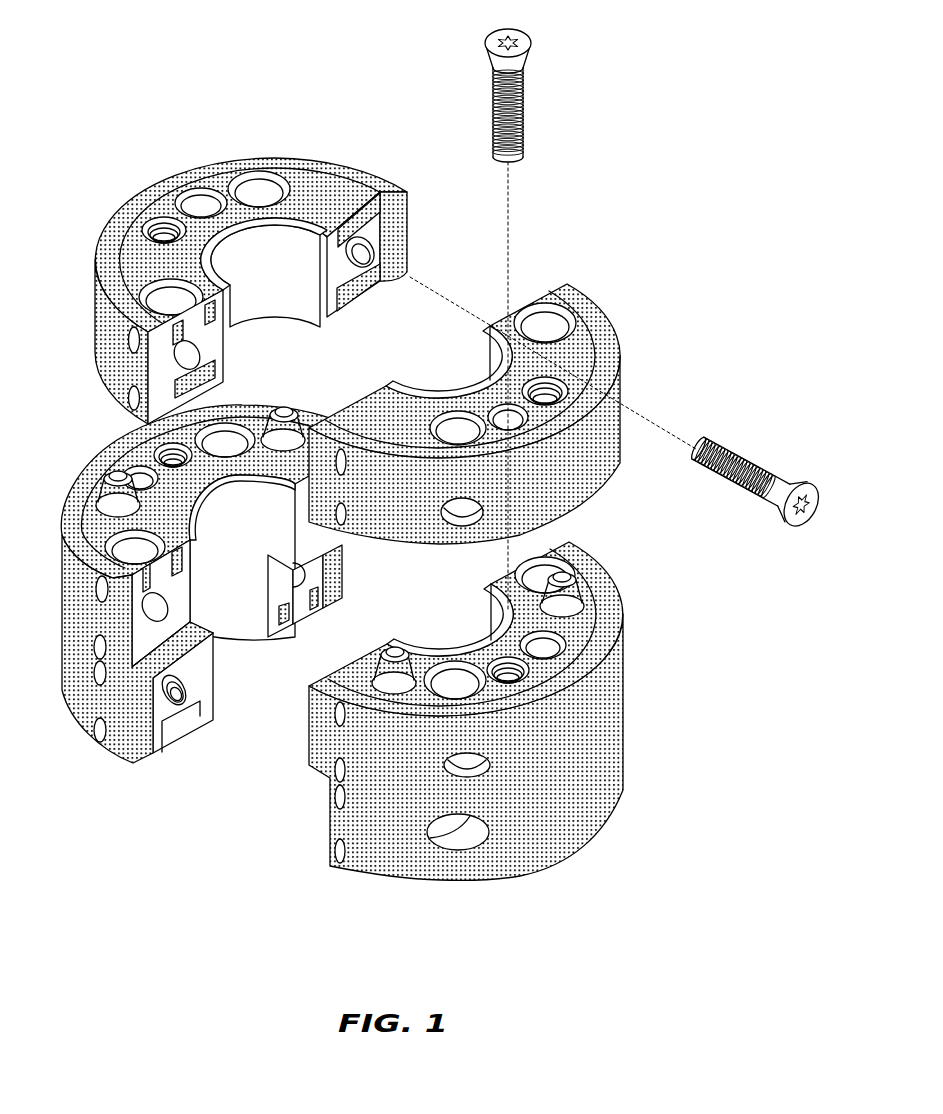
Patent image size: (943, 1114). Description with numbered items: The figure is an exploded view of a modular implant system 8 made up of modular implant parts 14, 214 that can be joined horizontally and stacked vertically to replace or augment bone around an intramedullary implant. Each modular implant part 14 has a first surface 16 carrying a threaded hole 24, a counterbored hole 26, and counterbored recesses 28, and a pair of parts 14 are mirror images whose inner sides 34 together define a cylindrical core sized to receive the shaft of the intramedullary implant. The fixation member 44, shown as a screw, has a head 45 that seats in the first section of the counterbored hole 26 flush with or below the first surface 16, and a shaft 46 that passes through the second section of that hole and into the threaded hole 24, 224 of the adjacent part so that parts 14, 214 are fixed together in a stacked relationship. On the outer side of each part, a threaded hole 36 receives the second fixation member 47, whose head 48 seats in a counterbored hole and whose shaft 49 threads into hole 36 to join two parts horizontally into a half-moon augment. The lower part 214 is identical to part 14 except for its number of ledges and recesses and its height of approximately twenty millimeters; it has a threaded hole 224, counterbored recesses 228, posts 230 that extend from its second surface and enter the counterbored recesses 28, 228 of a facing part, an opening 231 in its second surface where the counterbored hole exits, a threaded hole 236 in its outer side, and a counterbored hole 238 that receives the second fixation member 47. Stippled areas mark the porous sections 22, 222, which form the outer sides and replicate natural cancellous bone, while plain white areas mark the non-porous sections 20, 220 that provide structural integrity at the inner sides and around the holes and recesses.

The modular implant system 8 is at (100, 86).
The modular implant part 14 is at (103, 347).
The first surface 16 is at (320, 192).
The non-porous section 20 is at (380, 235).
The porous section 22 is at (273, 153).
The threaded hole 24 is at (157, 230).
The counterbored hole 26 is at (197, 207).
The counterbored recesses 28 is at (257, 183).
The inner side 34 is at (257, 297).
The hole 36 is at (367, 262).
The fixation member 44 is at (522, 83).
The head 45 is at (520, 38).
The shaft 46 is at (492, 105).
The second fixation member 47 is at (762, 490).
The head 48 is at (812, 512).
The shaft 49 is at (737, 483).
The modular implant part 214 is at (83, 707).
The non-porous section 220 is at (333, 655).
The porous section 222 is at (600, 590).
The threaded hole 224 is at (168, 450).
The counterbored recesses 228 is at (120, 545).
The posts 230 is at (105, 495).
The alignment hole 231 is at (125, 475).
The hole 236 is at (178, 695).
The counterbored hole 238 is at (470, 838).